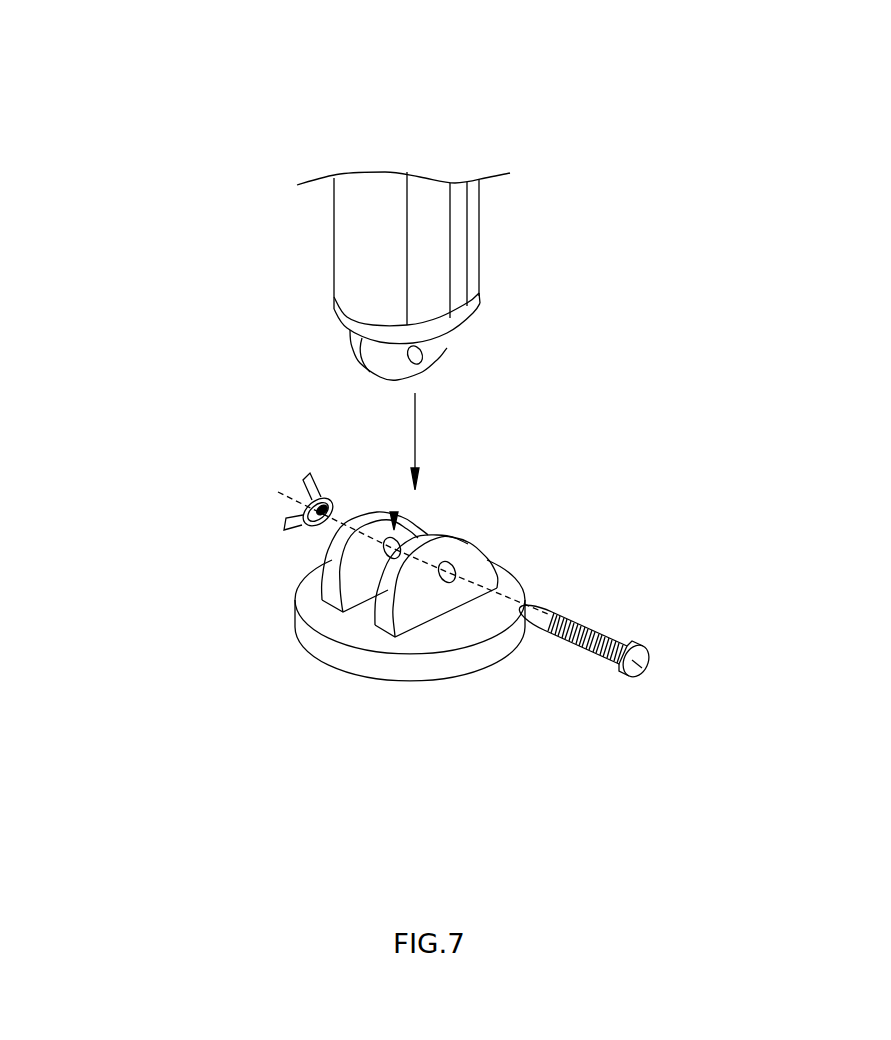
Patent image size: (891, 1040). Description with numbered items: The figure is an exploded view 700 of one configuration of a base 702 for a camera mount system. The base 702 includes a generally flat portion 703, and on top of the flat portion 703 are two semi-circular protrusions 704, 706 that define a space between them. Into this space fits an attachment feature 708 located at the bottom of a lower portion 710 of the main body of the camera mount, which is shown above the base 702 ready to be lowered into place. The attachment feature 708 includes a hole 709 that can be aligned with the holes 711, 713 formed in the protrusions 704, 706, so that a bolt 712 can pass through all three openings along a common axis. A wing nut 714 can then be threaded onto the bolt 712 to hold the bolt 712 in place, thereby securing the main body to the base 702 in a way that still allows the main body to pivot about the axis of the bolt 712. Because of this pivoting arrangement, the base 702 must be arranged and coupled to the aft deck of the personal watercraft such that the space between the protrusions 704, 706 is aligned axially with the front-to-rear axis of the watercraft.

The exploded view 700 is at (874, 63).
The base 702 is at (348, 643).
The flat portion 703 is at (397, 650).
The semi-circular protrusion 704 is at (465, 545).
The semi-circular protrusion 706 is at (373, 512).
The attachment feature 708 is at (443, 350).
The hole 709 is at (422, 357).
The lower portion 710 is at (480, 247).
The hole 711 is at (453, 568).
The bolt 712 is at (607, 633).
The hole 713 is at (393, 513).
The wing nut 714 is at (285, 527).